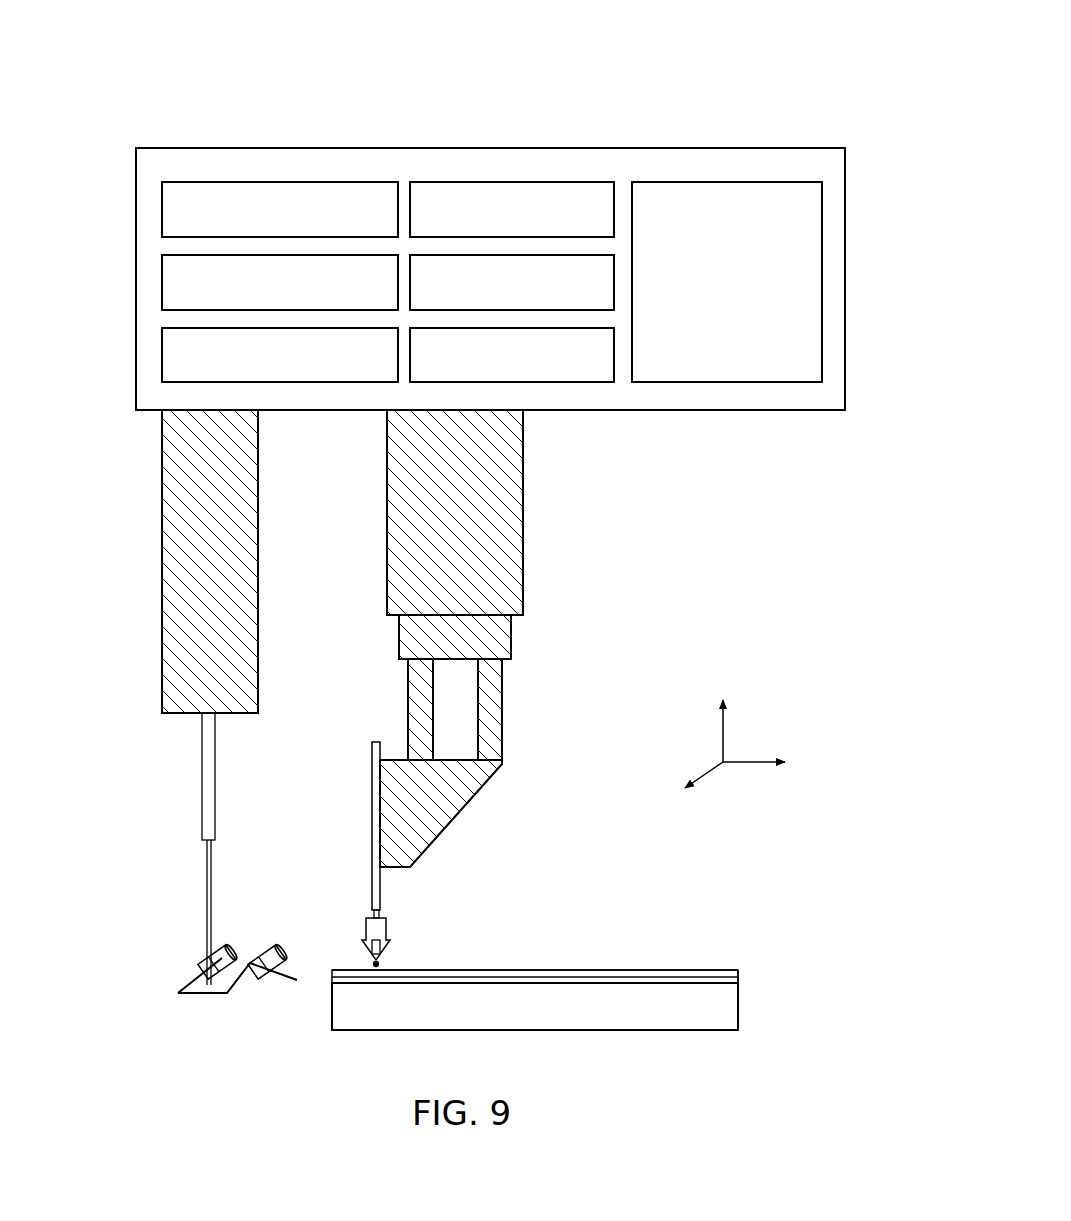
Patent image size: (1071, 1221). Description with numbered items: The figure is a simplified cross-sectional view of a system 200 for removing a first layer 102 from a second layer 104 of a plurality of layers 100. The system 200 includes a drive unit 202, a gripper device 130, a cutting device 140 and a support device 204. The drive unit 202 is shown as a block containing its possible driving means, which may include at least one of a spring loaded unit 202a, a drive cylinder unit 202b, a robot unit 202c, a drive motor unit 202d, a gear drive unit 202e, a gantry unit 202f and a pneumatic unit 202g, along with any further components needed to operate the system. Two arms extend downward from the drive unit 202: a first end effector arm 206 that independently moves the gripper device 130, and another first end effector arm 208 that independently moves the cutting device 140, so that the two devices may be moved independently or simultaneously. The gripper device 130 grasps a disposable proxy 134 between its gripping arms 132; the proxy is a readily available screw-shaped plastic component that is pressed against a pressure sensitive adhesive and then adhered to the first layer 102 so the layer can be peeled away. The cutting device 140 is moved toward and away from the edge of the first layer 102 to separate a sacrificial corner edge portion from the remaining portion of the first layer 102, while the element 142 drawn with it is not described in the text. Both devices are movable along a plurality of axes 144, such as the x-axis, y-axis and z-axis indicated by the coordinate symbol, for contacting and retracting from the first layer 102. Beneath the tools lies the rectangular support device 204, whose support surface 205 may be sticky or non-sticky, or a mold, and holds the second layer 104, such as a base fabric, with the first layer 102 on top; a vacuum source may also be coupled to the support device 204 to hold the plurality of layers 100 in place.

The system 200 is at (138, 58).
The drive unit 202 is at (846, 210).
The spring loaded unit 202a is at (162, 205).
The drive cylinder unit 202b is at (162, 278).
The robot unit 202c is at (162, 352).
The drive motor unit 202d is at (510, 150).
The gear drive unit 202e is at (614, 280).
The gantry unit 202f is at (614, 350).
The pneumatic unit 202g is at (822, 290).
The support device 204 is at (725, 1003).
The support surface 205 is at (740, 971).
The first end effector arm 206 is at (387, 490).
The first end effector arm 208 is at (162, 527).
The plurality of layers 100 is at (322, 977).
The first layer 102 is at (607, 970).
The second layer 104 is at (695, 977).
The gripper device 130 is at (388, 928).
The gripping arms 132 is at (363, 947).
The disposable proxy 134 is at (380, 963).
The cutting device 140 is at (249, 942).
The tool head 142 is at (268, 980).
The axes 144 is at (756, 733).